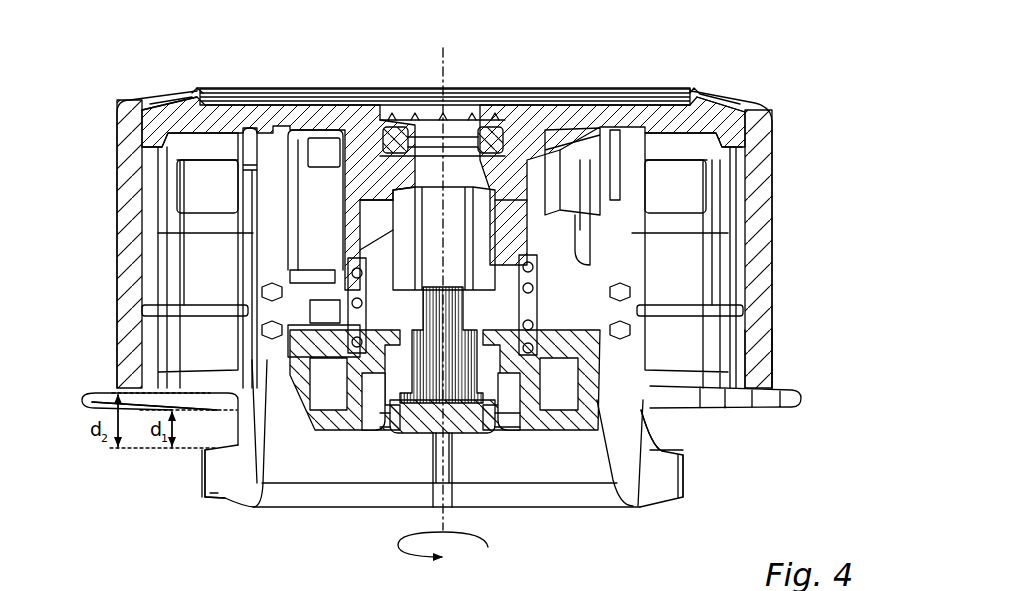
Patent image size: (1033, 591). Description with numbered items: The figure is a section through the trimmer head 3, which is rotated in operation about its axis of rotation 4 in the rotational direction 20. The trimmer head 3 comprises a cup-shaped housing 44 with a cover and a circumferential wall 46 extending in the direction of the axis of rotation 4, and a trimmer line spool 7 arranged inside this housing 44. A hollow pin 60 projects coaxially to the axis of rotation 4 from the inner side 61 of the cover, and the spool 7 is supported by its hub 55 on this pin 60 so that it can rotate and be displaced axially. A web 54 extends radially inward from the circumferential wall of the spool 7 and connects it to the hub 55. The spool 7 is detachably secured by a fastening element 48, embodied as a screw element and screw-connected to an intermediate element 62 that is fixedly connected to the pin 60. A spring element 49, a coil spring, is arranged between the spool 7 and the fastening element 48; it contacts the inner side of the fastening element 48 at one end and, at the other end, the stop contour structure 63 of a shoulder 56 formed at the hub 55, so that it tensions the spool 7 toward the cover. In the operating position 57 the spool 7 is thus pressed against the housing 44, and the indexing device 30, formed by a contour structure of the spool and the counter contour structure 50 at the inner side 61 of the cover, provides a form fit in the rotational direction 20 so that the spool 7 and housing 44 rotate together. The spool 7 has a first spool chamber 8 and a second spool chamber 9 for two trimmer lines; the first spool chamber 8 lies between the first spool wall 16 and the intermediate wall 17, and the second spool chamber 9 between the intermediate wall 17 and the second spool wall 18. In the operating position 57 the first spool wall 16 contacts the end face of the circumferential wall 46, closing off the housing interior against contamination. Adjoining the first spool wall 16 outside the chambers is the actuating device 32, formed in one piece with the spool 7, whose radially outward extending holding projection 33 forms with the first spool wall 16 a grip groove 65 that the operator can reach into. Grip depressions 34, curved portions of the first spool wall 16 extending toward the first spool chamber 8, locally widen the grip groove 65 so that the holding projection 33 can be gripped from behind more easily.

The trimmer head 3 is at (790, 70).
The axis of rotation 4 is at (446, 62).
The trimmer line spool 7 is at (201, 498).
The first spool chamber 8 is at (444, 349).
The second spool chamber 9 is at (444, 271).
The first spool wall 16 is at (93, 394).
The intermediate wall 17 is at (150, 310).
The second spool wall 18 is at (157, 223).
The rotational direction 20 is at (442, 556).
The indexing device 30 is at (592, 125).
The actuating device 32 is at (642, 507).
The holding projection 33 is at (203, 482).
The grip depression 34 is at (220, 406).
The housing 44 is at (772, 197).
The circumferential wall 46 is at (772, 313).
The fastening element 48 is at (333, 437).
The spring element 49 is at (347, 430).
The counter contour structure 50 is at (237, 157).
The web 54 is at (330, 290).
The hub 55 is at (342, 207).
The shoulder 56 is at (355, 258).
The operating position 57 is at (769, 473).
The pin 60 is at (370, 173).
The inner side 61 is at (318, 133).
The intermediate element 62 is at (407, 190).
The stop contour structure 63 is at (530, 262).
The grip groove 65 is at (680, 433).